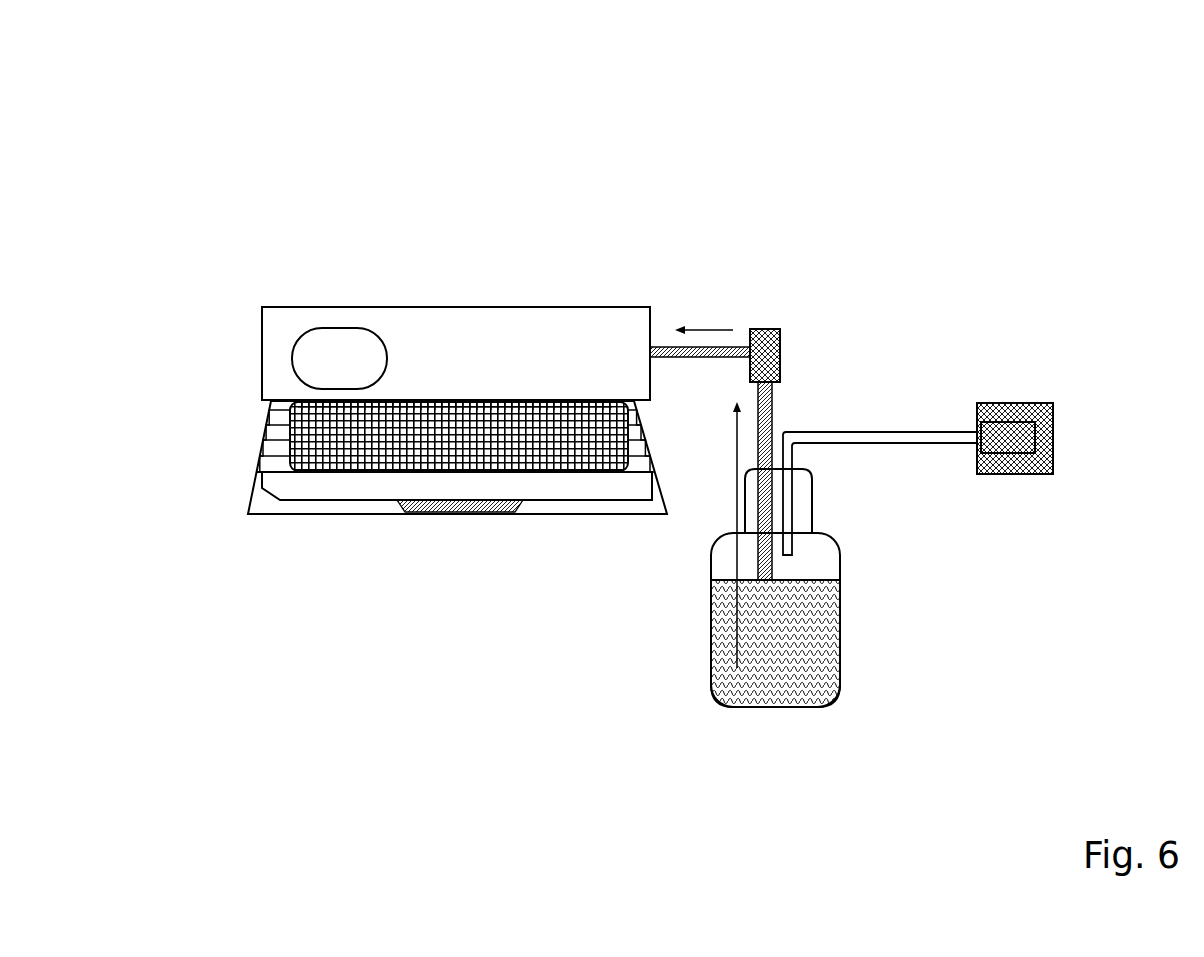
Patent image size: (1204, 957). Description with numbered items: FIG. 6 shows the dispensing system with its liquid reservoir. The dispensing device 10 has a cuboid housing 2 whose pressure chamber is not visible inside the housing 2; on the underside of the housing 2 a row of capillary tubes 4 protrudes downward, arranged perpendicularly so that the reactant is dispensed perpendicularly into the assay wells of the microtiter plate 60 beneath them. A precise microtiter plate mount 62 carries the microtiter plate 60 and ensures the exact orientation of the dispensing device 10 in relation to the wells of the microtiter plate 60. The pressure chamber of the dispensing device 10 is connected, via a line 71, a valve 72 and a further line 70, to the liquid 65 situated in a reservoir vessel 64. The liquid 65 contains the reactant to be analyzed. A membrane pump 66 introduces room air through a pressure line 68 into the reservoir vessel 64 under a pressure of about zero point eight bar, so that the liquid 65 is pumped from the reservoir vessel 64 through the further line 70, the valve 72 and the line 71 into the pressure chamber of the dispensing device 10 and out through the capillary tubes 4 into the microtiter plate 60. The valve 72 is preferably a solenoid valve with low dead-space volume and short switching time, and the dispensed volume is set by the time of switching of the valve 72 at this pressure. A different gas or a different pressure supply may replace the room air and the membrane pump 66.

The dispensing device 10 is at (508, 148).
The housing 2 is at (487, 333).
The capillary tube 4 is at (303, 403).
The microtiter plate 60 is at (562, 450).
The microtiter plate mount 62 is at (312, 507).
The line 71 is at (670, 347).
The valve 72 is at (781, 340).
The further line 70 is at (773, 407).
The reservoir vessel 64 is at (840, 652).
The liquid 65 is at (735, 673).
The pressure line 68 is at (903, 438).
The membrane pump 66 is at (1053, 452).